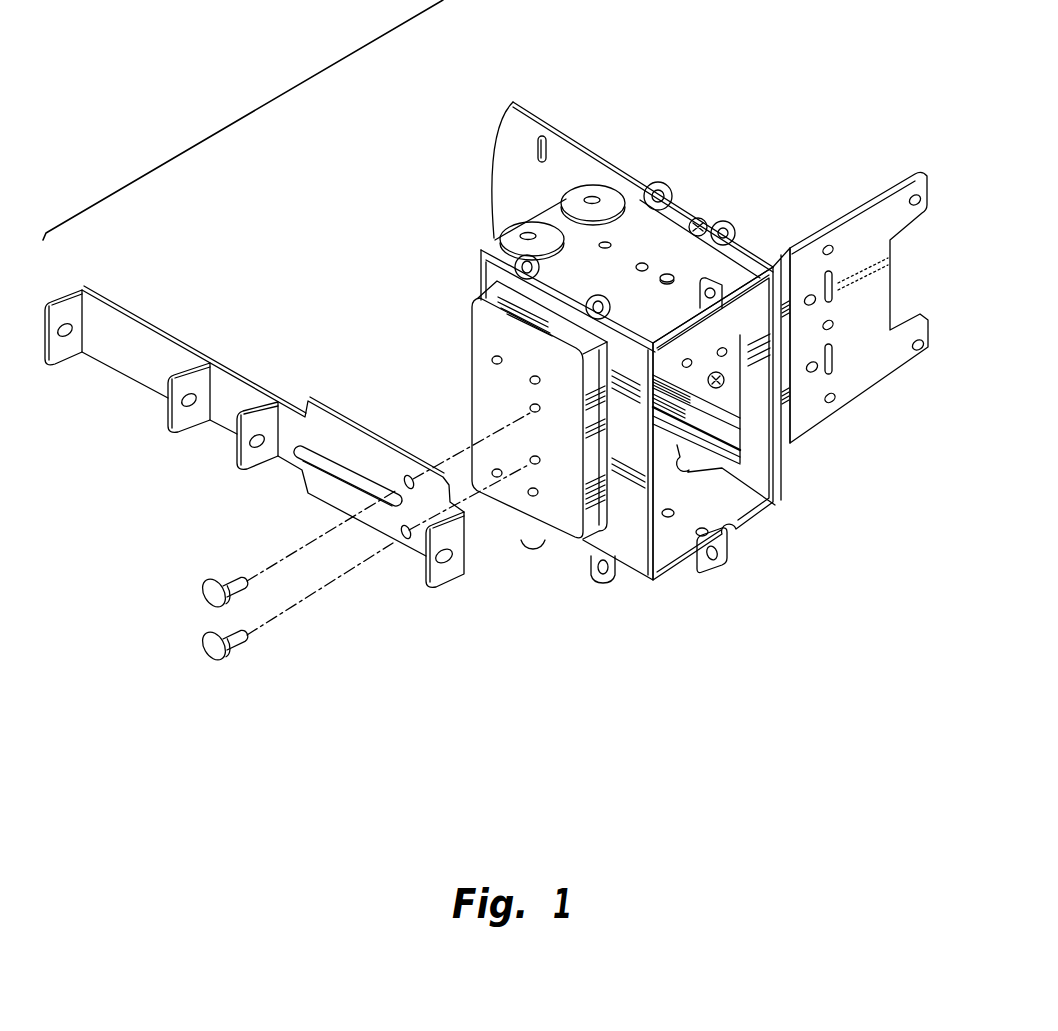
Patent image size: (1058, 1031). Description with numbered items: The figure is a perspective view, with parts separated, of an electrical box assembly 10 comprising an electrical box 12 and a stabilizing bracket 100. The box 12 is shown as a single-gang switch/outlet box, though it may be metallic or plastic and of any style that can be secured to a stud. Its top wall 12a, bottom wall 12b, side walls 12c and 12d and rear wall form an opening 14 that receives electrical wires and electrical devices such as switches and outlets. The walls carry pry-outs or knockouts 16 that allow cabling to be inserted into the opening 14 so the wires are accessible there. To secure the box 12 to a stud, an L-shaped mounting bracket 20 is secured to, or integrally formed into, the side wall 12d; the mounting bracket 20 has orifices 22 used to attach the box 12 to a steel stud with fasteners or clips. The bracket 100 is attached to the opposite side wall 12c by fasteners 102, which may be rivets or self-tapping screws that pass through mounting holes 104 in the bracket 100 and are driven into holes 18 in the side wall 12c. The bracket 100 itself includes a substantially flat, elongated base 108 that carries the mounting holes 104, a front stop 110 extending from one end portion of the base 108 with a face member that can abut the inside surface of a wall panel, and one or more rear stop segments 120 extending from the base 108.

The electrical box assembly 10 is at (231, 112).
The electrical box 12 is at (460, 211).
The top wall 12a is at (745, 270).
The bottom wall 12b is at (665, 570).
The side wall 12c is at (632, 557).
The side wall 12d is at (782, 443).
The opening 14 is at (742, 503).
The knockouts 16 is at (588, 196).
The holes 18 is at (530, 408).
The mounting bracket 20 is at (539, 106).
The orifices 22 is at (809, 296).
The bracket 100 is at (352, 703).
The fasteners 102 is at (211, 582).
The mounting holes 104 is at (405, 475).
The base 108 is at (339, 400).
The front stop 110 is at (449, 595).
The rear stop segments 120 is at (144, 308).